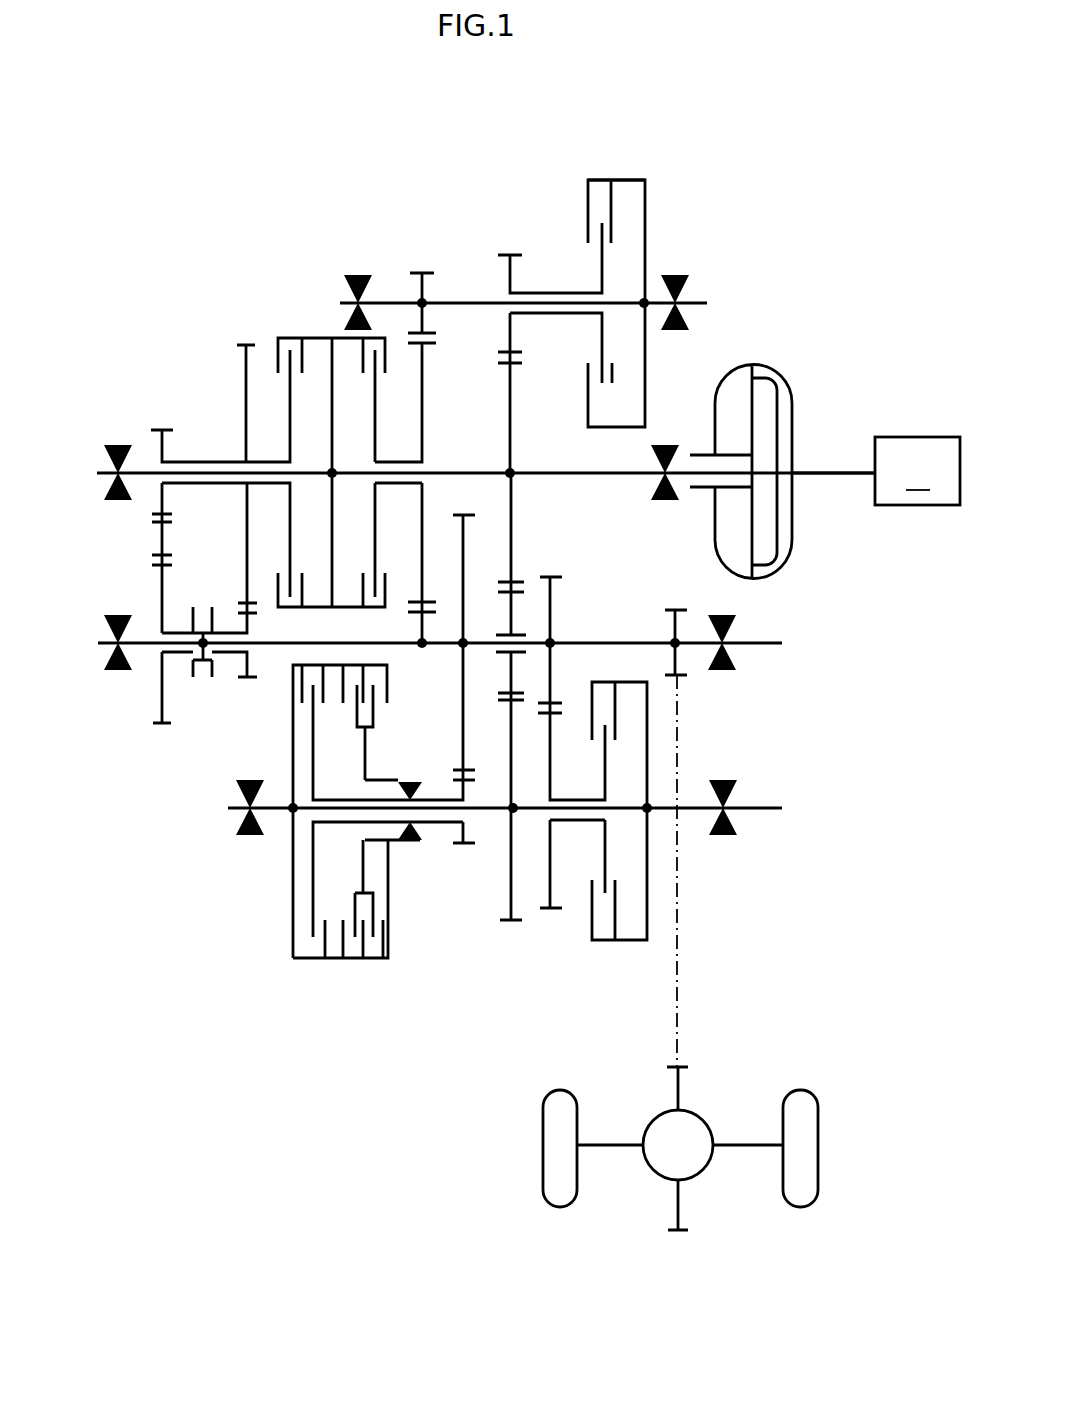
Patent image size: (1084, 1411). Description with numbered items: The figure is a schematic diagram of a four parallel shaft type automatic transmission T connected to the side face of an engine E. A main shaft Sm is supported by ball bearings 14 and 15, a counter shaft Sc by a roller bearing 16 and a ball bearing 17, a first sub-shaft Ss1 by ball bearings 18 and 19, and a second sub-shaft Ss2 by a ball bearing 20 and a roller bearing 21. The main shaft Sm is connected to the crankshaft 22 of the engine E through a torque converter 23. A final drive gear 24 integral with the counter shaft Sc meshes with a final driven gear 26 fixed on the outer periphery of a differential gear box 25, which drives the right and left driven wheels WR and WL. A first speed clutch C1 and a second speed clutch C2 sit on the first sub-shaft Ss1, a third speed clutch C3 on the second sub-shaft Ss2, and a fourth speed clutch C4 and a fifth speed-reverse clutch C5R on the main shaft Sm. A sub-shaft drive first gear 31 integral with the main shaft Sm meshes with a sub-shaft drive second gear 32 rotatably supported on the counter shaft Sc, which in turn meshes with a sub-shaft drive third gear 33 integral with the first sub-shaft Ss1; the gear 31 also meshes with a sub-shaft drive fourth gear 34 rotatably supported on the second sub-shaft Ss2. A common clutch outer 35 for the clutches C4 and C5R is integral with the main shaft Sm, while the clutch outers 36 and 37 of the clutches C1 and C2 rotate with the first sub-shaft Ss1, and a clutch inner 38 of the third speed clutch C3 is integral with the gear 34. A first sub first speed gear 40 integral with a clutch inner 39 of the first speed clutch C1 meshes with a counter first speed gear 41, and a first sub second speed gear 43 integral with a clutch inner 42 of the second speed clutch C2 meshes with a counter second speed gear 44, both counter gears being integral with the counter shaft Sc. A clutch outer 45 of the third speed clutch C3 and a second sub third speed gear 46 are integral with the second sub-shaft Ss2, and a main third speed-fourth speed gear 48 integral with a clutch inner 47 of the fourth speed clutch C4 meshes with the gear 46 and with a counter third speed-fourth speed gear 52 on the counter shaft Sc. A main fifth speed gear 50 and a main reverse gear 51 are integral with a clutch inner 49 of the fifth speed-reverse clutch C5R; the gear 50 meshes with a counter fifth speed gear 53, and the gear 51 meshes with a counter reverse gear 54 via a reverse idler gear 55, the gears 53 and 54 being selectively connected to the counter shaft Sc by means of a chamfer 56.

The ball bearing 14 is at (666, 443).
The ball bearing 15 is at (118, 443).
The roller bearing 16 is at (722, 626).
The ball bearing 17 is at (116, 613).
The ball bearing 18 is at (724, 780).
The ball bearing 19 is at (250, 780).
The ball bearing 20 is at (673, 284).
The roller bearing 21 is at (356, 277).
The crankshaft 22 is at (842, 470).
The torque converter 23 is at (781, 370).
The final drive gear 24 is at (676, 608).
The differential gear box 25 is at (692, 1130).
The final driven gear 26 is at (682, 1066).
The sub-shaft drive first gear 31 is at (516, 370).
The sub-shaft drive second gear 32 is at (497, 587).
The sub-shaft drive third gear 33 is at (503, 922).
The sub-shaft drive fourth gear 34 is at (511, 253).
The common clutch outer 35 is at (333, 608).
The clutch outer 36 is at (372, 960).
The clutch outer 37 is at (600, 942).
The clutch inner 38 is at (600, 352).
The clutch inner 39 is at (315, 887).
The first sub first speed gear 40 is at (466, 870).
The counter first speed gear 41 is at (460, 512).
The clutch inner 42 is at (601, 830).
The first sub second speed gear 43 is at (550, 912).
The counter second speed gear 44 is at (549, 575).
The clutch outer 45 is at (606, 180).
The second sub third speed gear 46 is at (422, 270).
The clutch inner 47 is at (377, 545).
The main third speed-fourth speed gear 48 is at (428, 348).
The clutch inner 49 is at (290, 552).
The main fifth speed gear 50 is at (240, 333).
The main reverse gear 51 is at (165, 425).
The counter third speed-fourth speed gear 52 is at (420, 680).
The counter fifth speed gear 53 is at (249, 680).
The counter reverse gear 54 is at (167, 726).
The reverse idler gear 55 is at (168, 540).
The chamfer 56 is at (194, 675).
The four parallel shaft type automatic transmission T is at (348, 250).
The engine E is at (917, 471).
The first speed clutch C1 is at (328, 960).
The second speed clutch C2 is at (623, 944).
The third speed clutch C3 is at (648, 224).
The fourth speed clutch C4 is at (345, 336).
The fifth speed-reverse clutch C5R is at (285, 336).
The main shaft Sm is at (530, 476).
The counter shaft Sc is at (605, 640).
The first sub-shaft Ss1 is at (748, 813).
The second sub-shaft Ss2 is at (467, 301).
The left driven wheel WL is at (558, 1098).
The right driven wheel WR is at (795, 1098).